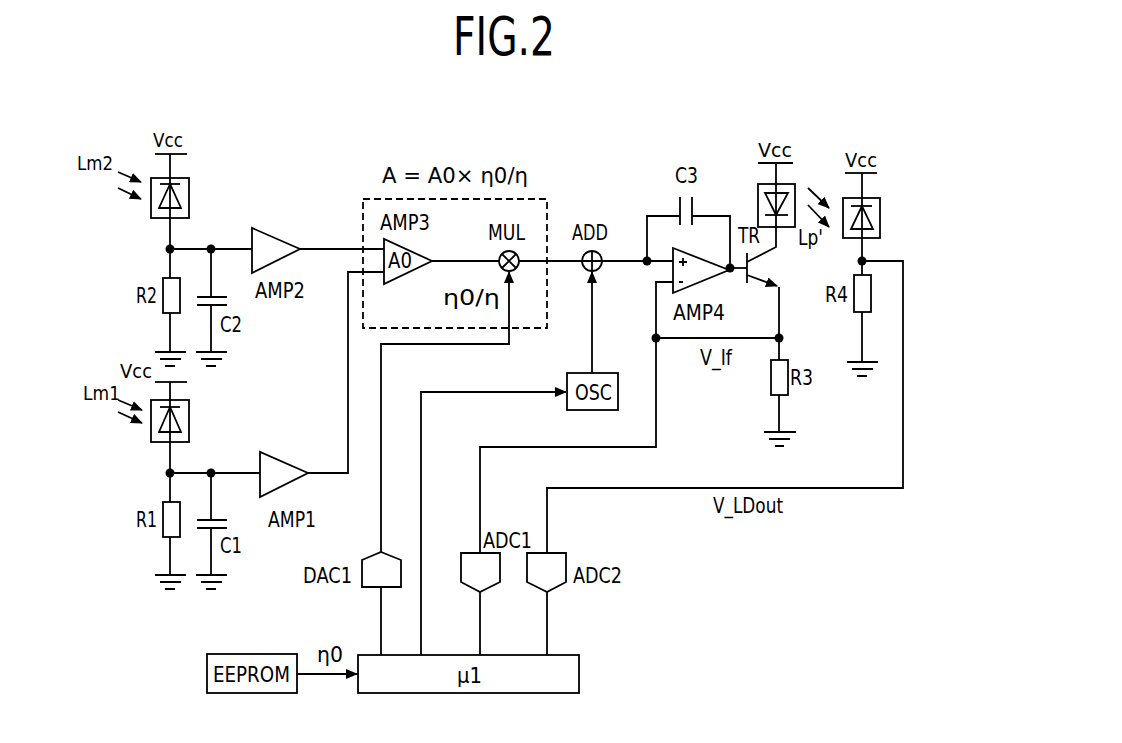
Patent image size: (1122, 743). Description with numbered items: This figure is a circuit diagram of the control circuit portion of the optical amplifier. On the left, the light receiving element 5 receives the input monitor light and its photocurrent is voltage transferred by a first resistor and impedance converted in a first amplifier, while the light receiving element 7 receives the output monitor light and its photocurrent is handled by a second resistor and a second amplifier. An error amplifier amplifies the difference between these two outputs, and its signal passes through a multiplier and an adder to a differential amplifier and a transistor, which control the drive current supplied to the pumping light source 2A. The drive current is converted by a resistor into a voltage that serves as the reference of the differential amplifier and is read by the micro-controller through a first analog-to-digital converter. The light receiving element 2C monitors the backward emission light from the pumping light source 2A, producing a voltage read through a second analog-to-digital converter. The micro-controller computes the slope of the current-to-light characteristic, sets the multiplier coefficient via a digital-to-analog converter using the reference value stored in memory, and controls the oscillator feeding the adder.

The light receiving element 7 is at (189, 197).
The light receiving element 5 is at (189, 420).
The pumping light source 2A is at (758, 198).
The light receiving element 2C is at (880, 216).